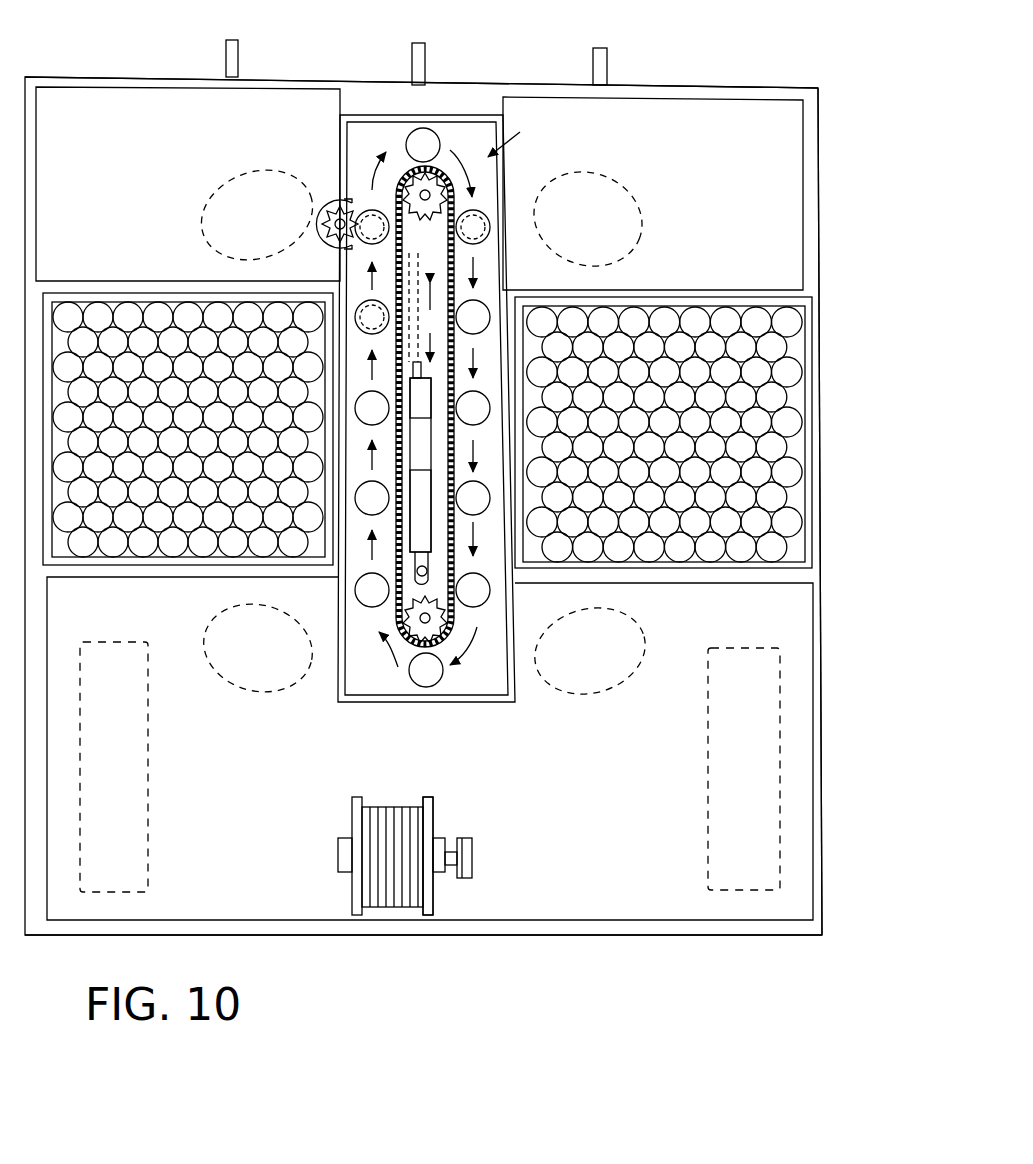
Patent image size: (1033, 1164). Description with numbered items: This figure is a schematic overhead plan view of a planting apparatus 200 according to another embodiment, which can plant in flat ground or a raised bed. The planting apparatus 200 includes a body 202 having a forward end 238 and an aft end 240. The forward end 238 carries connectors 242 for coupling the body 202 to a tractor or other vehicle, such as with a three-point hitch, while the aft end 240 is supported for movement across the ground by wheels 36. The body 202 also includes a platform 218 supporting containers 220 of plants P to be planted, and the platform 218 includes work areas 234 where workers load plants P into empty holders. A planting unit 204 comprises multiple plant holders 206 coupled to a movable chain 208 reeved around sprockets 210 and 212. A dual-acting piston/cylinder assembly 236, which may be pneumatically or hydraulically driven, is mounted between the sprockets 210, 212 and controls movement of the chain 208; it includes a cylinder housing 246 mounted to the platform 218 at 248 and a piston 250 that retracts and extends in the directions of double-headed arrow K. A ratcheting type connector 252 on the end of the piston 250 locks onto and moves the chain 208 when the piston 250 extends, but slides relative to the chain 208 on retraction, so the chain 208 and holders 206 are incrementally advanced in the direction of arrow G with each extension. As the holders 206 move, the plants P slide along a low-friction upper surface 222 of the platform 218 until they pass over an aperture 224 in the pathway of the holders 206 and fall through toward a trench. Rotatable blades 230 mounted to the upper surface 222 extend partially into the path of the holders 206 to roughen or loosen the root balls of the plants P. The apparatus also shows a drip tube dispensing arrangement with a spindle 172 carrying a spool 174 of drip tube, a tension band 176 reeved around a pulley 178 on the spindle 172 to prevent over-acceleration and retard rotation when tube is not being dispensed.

The planting apparatus 200 is at (733, 58).
The body 202 is at (818, 168).
The planting unit 204 is at (500, 156).
The plant holders 206 is at (478, 165).
The chain 208 is at (412, 343).
The sprocket 210 is at (462, 680).
The sprocket 212 is at (410, 185).
The platform 218 is at (775, 246).
The containers 220 is at (163, 572).
The upper surface 222 is at (488, 200).
The aperture 224 is at (424, 148).
The rotatable blades 230 is at (336, 204).
The work areas 234 is at (230, 178).
The dual-acting piston/cylinder assembly 236 is at (431, 455).
The forward end 238 is at (768, 88).
The aft end 240 is at (665, 935).
The connectors 242 is at (226, 56).
The cylinder housing 246 is at (431, 498).
The mounting point 248 is at (440, 622).
The piston 250 is at (432, 384).
The ratcheting type connector 252 is at (421, 367).
The spindle 172 is at (340, 850).
The spool 174 is at (433, 910).
The tension band 176 is at (463, 840).
The pulley 178 is at (472, 850).
The wheels 36 is at (153, 803).
The plants P is at (142, 340).
The double-headed arrow K is at (456, 271).
The arrow G is at (370, 705).